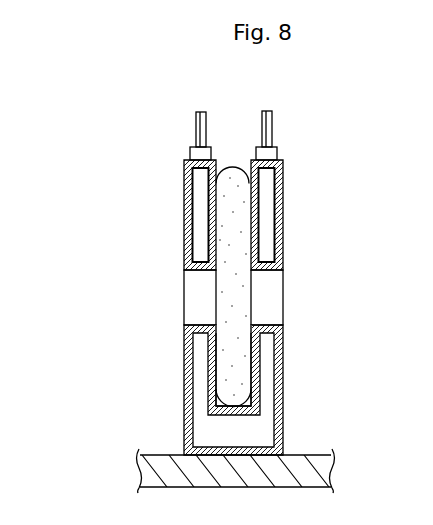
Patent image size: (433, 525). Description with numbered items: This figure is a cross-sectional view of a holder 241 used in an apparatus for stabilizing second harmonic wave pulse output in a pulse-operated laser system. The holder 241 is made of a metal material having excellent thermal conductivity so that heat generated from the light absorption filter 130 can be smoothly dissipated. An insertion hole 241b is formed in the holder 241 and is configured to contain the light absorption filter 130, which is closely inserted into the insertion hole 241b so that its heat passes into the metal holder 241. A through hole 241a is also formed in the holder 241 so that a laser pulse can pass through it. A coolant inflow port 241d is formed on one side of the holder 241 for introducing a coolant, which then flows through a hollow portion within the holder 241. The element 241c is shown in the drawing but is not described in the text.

The base housing 130 is at (213, 315).
The terminal pin assembly 241 is at (207, 248).
The fixing portion 241a is at (215, 270).
The contact rod 241b is at (231, 176).
The insertion hole 241c is at (263, 208).
The lead pin 241d is at (191, 152).